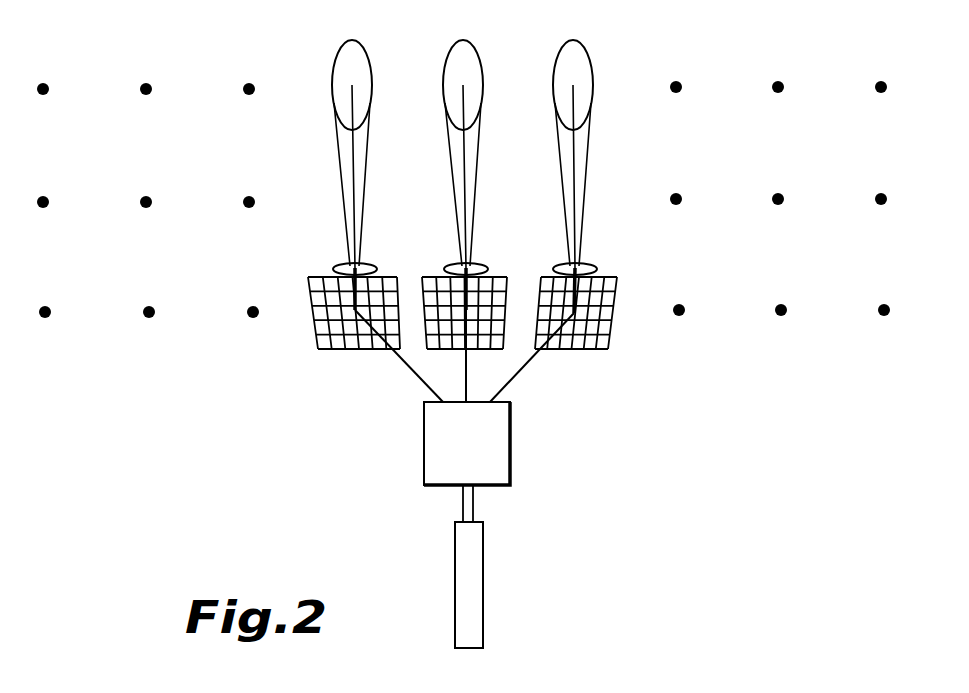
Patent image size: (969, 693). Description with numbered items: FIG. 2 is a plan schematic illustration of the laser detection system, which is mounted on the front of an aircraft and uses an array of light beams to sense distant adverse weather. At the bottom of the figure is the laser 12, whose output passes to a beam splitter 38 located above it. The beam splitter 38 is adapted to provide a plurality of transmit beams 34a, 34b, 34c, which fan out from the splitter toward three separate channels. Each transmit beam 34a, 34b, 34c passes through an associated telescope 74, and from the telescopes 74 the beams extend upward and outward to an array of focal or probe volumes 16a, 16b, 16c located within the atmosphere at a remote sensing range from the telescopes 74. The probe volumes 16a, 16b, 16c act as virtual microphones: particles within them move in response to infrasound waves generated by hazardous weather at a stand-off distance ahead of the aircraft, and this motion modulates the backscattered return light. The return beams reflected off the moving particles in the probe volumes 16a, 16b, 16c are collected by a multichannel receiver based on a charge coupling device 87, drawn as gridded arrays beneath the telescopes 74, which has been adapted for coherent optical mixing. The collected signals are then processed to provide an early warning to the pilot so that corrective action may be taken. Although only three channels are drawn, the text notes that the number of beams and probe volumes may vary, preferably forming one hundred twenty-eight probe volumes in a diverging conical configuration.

The probe volume 16a is at (557, 48).
The probe volume 16b is at (447, 50).
The probe volume 16c is at (338, 50).
The telescope 74 is at (556, 266).
The charge coupling device 87 is at (612, 322).
The transmit beam 34a is at (521, 372).
The transmit beam 34b is at (464, 396).
The transmit beam 34c is at (415, 375).
The beam splitter 38 is at (430, 447).
The laser 12 is at (478, 596).